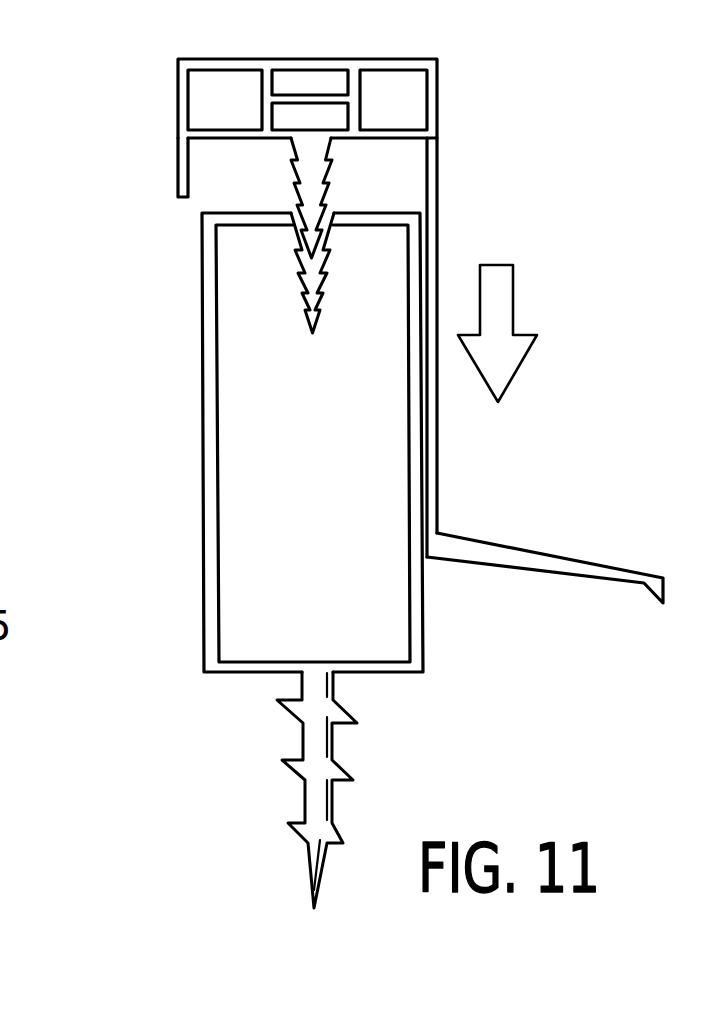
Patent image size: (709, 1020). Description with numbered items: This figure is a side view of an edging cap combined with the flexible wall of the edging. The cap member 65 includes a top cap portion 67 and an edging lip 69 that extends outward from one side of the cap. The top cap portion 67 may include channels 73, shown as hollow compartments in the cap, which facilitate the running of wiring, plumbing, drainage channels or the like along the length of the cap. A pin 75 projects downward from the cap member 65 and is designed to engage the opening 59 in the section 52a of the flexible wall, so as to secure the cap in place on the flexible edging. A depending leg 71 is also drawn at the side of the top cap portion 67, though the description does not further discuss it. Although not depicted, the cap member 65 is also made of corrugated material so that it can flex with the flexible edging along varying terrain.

The cap member 65 is at (504, 68).
The top cap portion 67 is at (235, 58).
The depending side leg 71 is at (177, 176).
The channels 73 is at (333, 87).
The pin 75 is at (329, 167).
The edging lip 69 is at (580, 562).
The section 52a is at (218, 558).
The opening 59 is at (330, 295).